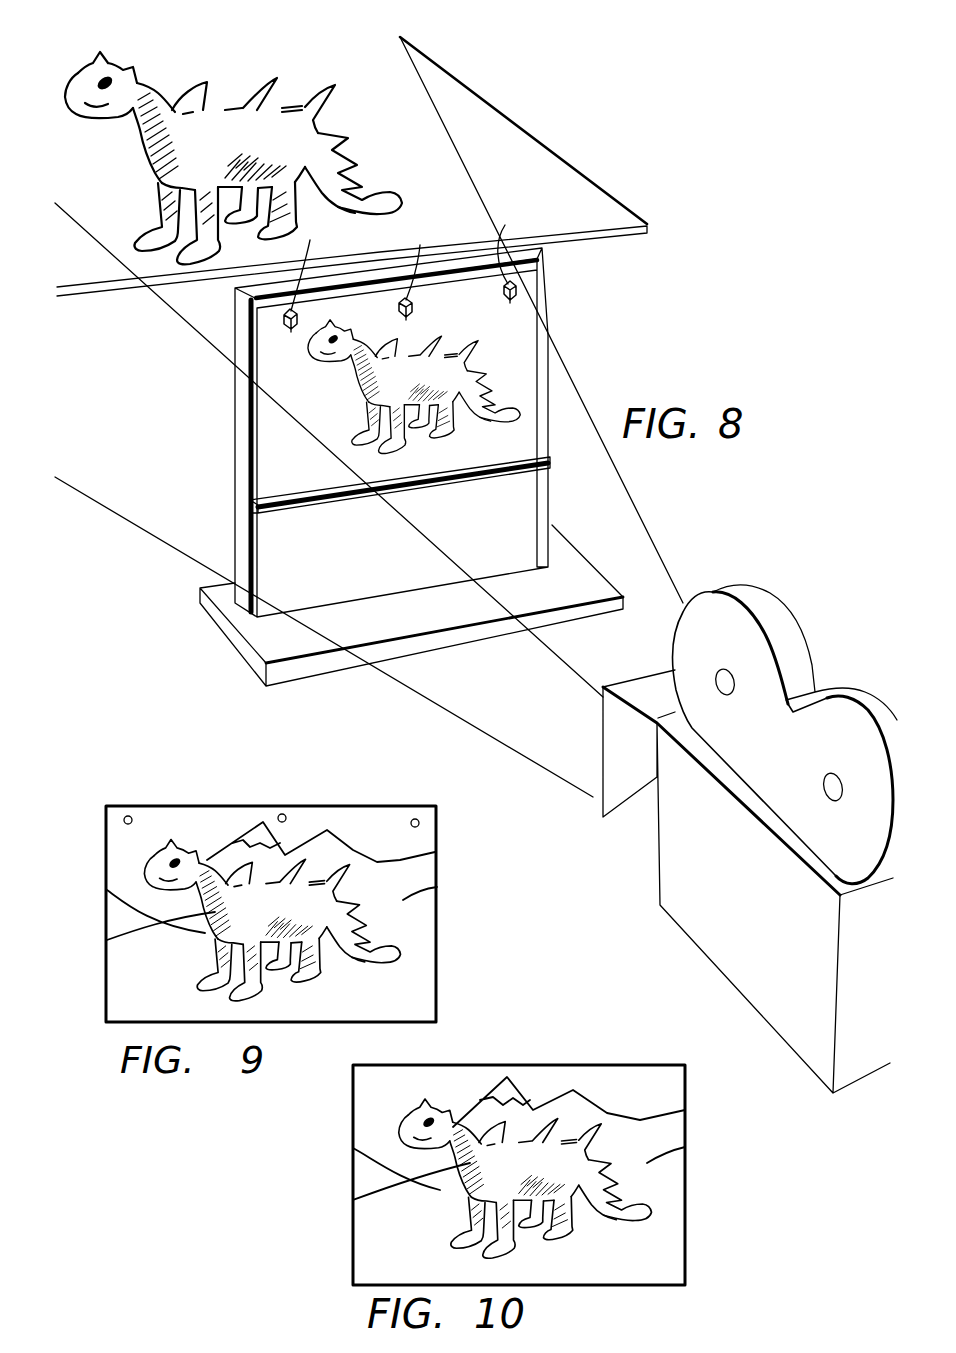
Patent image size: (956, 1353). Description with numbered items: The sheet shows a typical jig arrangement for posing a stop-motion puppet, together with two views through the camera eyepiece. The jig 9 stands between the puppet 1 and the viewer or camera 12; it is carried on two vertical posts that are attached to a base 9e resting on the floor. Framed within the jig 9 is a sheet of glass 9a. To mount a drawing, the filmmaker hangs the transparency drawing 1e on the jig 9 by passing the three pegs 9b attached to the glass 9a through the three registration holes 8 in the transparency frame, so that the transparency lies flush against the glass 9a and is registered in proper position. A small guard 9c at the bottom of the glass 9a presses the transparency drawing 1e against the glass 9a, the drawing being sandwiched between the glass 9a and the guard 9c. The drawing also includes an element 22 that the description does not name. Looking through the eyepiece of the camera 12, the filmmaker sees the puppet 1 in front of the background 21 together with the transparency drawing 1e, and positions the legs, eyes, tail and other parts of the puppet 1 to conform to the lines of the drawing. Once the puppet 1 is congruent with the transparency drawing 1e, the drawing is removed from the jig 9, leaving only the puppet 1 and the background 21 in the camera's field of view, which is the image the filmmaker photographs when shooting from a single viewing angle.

In FIG. 8, the puppet 1 is at (313, 132).
In FIG. 9, the puppet 1 is at (207, 930).
In FIG. 10, the puppet 1 is at (460, 1182).
In FIG. 8, the transparency drawing 1e is at (490, 338).
In FIG. 8, the registration holes 8 is at (400, 265).
In FIG. 8, the jig 9 is at (235, 374).
In FIG. 8, the sheet of glass 9a is at (300, 430).
In FIG. 8, the pegs 9b is at (506, 291).
In FIG. 8, the guard 9c is at (492, 473).
In FIG. 8, the base 9e is at (590, 580).
In FIG. 8, the viewer or camera 12 is at (780, 613).
In FIG. 9, the background 21 is at (437, 887).
In FIG. 10, the background 21 is at (685, 1147).
In FIG. 8, the light beam 22 is at (528, 147).